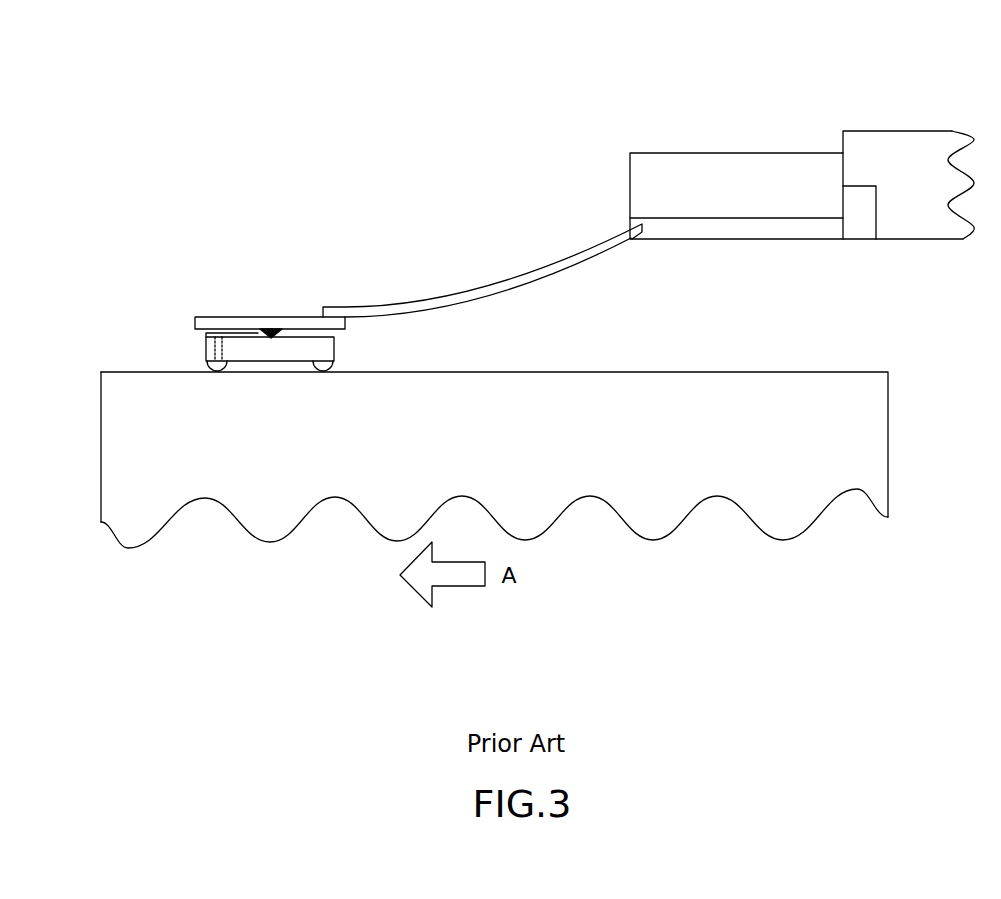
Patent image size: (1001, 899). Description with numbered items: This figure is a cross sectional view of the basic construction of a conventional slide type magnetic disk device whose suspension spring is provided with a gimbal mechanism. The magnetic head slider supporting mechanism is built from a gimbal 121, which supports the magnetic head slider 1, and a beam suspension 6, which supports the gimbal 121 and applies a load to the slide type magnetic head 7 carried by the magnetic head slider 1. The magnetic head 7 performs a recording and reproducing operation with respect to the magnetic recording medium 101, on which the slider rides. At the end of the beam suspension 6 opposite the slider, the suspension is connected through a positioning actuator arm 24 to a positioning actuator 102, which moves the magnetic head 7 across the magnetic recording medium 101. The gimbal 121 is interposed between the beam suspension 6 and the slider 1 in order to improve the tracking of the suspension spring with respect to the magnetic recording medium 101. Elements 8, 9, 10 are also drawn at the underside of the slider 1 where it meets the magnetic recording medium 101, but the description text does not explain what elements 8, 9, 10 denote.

The magnetic head slider 1 is at (298, 345).
The gimbal 121 is at (258, 325).
The slide type magnetic head 7 is at (215, 337).
The pad 8 is at (206, 366).
The pad 9 is at (383, 357).
The pad 10 is at (337, 362).
The beam suspension 6 is at (485, 292).
The positioning actuator arm 24 is at (741, 152).
The positioning actuator 102 is at (903, 130).
The magnetic recording medium 101 is at (258, 513).